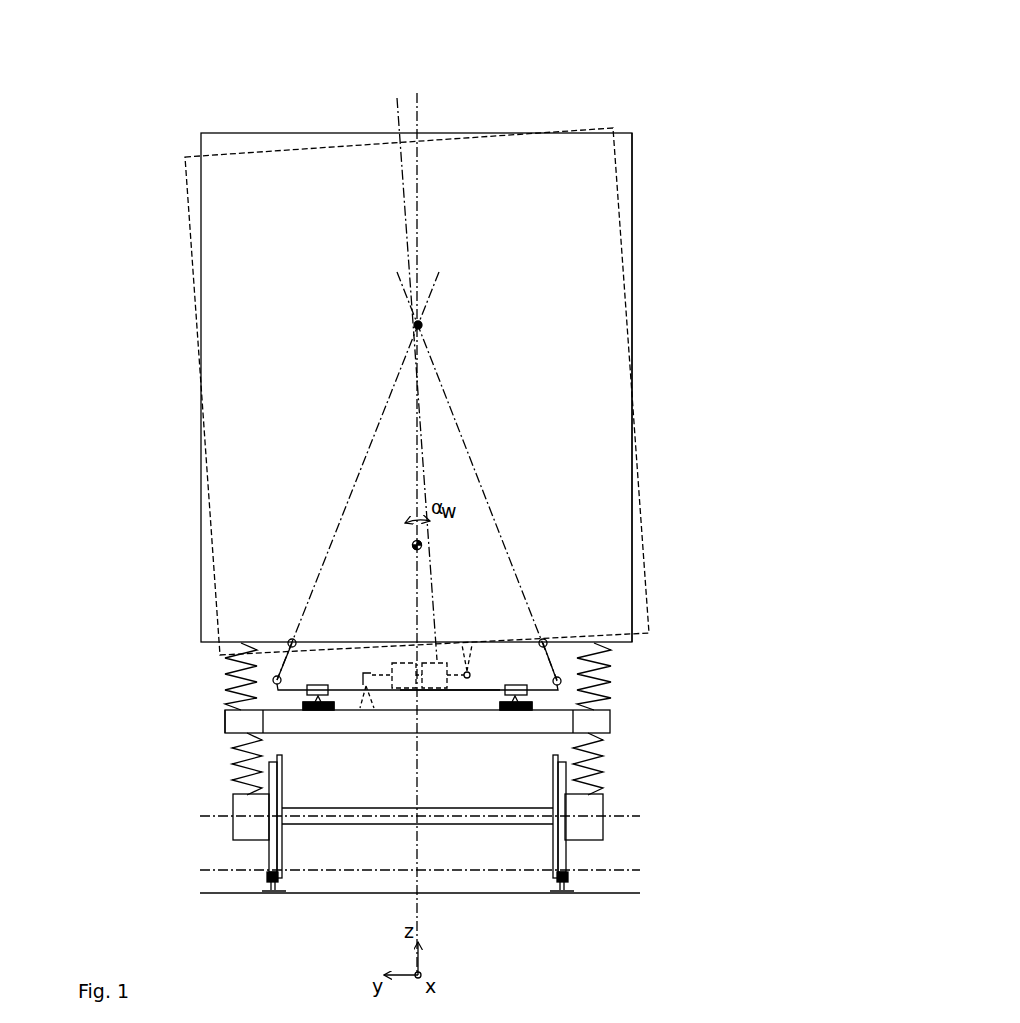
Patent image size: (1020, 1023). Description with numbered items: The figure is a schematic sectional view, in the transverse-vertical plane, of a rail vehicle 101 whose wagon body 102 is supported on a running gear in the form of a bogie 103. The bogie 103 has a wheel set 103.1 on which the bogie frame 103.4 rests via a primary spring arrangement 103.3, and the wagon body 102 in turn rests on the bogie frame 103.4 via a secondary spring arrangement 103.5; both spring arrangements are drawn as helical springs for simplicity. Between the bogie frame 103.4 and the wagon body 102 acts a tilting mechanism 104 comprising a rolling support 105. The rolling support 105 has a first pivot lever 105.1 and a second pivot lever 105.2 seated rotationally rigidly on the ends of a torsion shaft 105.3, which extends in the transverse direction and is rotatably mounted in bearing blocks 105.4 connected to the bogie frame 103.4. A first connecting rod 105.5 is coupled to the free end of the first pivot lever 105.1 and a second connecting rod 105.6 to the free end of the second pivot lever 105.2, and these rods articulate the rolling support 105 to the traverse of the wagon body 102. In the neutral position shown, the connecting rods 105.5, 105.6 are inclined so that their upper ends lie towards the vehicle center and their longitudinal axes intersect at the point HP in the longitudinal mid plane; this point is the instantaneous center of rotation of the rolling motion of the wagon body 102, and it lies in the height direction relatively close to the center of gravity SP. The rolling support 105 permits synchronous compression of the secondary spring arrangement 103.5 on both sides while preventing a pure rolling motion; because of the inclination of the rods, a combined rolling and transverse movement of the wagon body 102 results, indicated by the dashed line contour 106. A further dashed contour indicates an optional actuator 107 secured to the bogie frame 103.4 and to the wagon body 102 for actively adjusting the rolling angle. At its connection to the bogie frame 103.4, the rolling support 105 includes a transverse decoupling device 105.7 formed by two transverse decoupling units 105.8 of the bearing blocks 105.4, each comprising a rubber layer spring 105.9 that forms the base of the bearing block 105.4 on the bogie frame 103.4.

The rail vehicle 101 is at (652, 115).
The wagon body 102 is at (637, 195).
The dashed line contour 106 is at (183, 157).
The rolling pole / pivot point HP is at (429, 322).
The center of gravity SP is at (410, 544).
The bogie 103 is at (194, 744).
The wheel set 103.1 is at (229, 845).
The primary spring arrangement 103.3 is at (229, 777).
The bogie frame 103.4 is at (221, 719).
The secondary spring arrangement 103.5 is at (224, 676).
The tilting mechanism 104 is at (586, 681).
The rolling support 105 is at (407, 781).
The first pivot lever 105.1 is at (563, 692).
The second pivot lever 105.2 is at (271, 687).
The torsion shaft 105.3 is at (458, 695).
The bearing blocks 105.4 is at (305, 694).
The first connecting rod 105.5 is at (555, 654).
The second connecting rod 105.6 is at (278, 658).
The transverse decoupling device 105.7 is at (541, 705).
The transverse decoupling units 105.8 is at (310, 714).
The rubber layer spring 105.9 is at (324, 714).
The actuator 107 is at (400, 692).